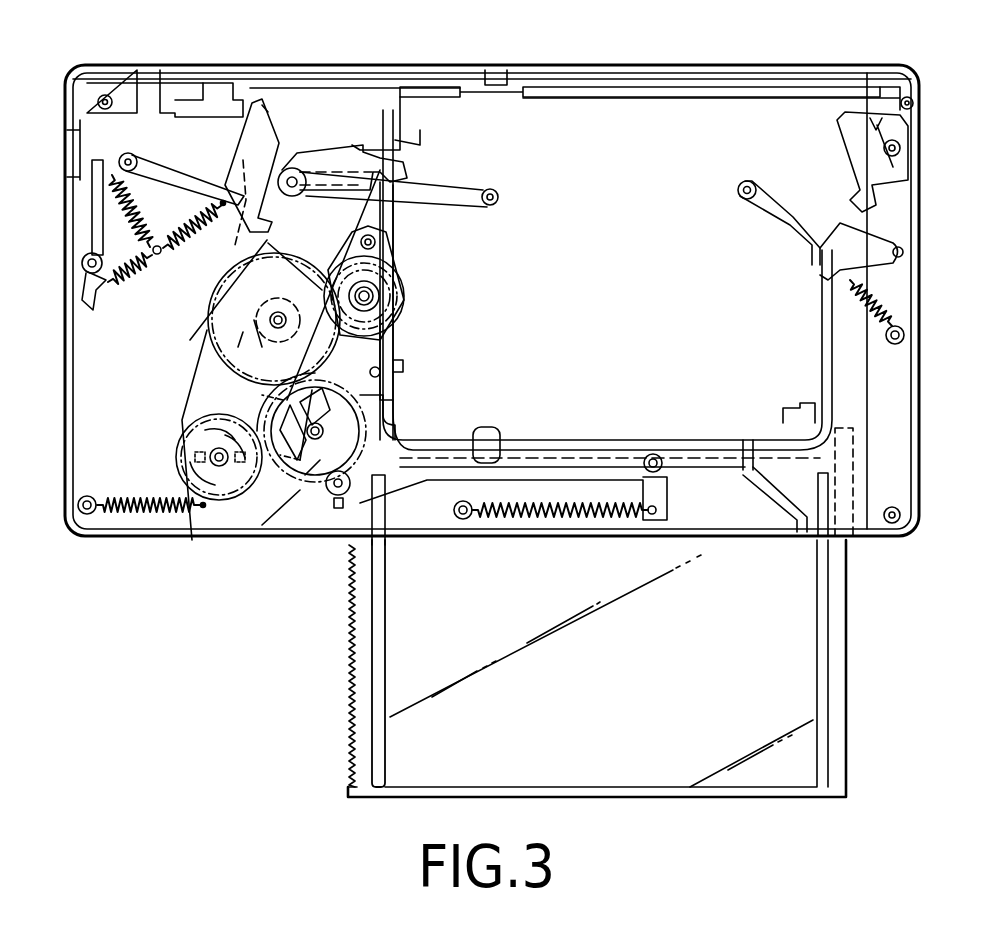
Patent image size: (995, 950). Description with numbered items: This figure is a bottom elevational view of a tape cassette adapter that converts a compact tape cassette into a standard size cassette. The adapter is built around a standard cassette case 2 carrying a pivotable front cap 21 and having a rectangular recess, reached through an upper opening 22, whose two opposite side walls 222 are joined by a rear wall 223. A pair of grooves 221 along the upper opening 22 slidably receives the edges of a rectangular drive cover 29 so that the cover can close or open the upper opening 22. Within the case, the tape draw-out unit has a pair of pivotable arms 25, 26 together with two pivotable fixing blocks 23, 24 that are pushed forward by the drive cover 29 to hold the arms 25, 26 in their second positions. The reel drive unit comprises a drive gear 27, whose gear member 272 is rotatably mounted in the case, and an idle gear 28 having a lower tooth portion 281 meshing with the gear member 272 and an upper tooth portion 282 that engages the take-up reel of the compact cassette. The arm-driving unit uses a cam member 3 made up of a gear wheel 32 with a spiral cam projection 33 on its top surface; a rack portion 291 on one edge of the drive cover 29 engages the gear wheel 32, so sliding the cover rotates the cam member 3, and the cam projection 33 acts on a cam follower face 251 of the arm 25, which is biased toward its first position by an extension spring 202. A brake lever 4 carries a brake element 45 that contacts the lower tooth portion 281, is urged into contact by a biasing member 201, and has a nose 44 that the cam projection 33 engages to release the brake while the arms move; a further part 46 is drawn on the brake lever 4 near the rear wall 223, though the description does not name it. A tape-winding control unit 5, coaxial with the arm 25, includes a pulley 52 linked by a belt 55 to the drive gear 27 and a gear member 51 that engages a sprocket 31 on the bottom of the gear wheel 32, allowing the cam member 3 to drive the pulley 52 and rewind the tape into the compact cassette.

The standard cassette case 2 is at (117, 540).
The pivotable front cap 21 is at (541, 68).
The upper opening 22 is at (678, 122).
The fixing block 23 is at (258, 130).
The fixing block 24 is at (862, 148).
The arm 26 is at (895, 240).
The side walls 222 is at (398, 346).
The rear wall 223 is at (655, 440).
The grooves 221 is at (840, 510).
The drive cover 29 is at (848, 655).
The rack portion 291 is at (352, 690).
The idle gear 28 is at (380, 246).
The lower tooth portion 281 is at (350, 292).
The upper tooth portion 282 is at (405, 296).
The brake element 45 is at (400, 320).
The drive gear 27 is at (415, 336).
The cam projection 33 is at (393, 370).
The cam member 3 is at (345, 420).
The slider block 46 is at (495, 428).
The brake lever 4 is at (577, 468).
The gear member 272 is at (243, 282).
The belt 55 is at (232, 302).
The arm 25 is at (222, 342).
The cam follower face 251 is at (246, 398).
The sprocket 31 is at (265, 405).
The tape-winding control unit 5 is at (176, 435).
The pulley 52 is at (176, 446).
The gear member 51 is at (180, 478).
The gear wheel 32 is at (303, 488).
The nose 44 is at (328, 500).
The extension spring 202 is at (170, 516).
The biasing member 201 is at (557, 518).